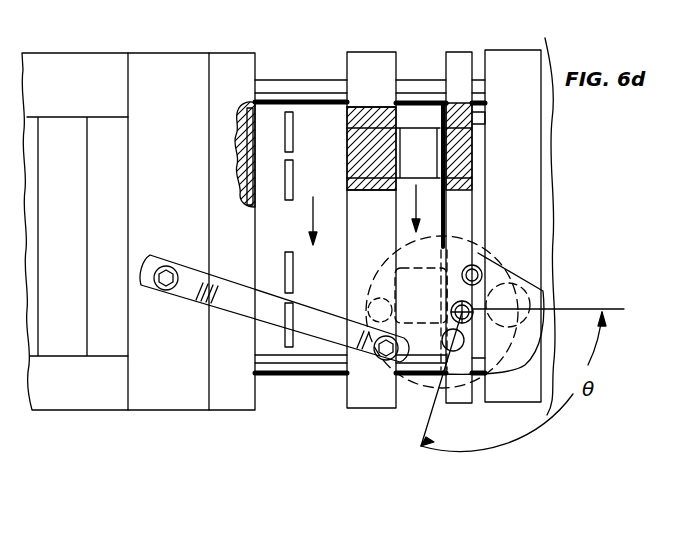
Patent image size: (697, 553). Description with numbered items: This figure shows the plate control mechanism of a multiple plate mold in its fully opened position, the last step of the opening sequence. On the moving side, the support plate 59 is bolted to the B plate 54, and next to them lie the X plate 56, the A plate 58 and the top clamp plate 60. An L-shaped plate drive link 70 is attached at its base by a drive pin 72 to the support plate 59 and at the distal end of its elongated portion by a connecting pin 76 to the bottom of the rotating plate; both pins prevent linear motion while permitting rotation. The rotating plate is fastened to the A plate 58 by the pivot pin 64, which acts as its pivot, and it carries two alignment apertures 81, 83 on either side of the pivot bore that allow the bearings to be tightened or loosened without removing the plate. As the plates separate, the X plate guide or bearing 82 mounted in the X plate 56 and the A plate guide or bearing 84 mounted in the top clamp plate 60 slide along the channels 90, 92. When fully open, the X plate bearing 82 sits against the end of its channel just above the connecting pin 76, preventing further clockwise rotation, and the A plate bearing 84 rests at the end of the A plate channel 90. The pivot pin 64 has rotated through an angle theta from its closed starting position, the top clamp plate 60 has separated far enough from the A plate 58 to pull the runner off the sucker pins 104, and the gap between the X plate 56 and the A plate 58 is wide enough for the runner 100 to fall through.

The support plate 59 is at (172, 53).
The B plate 54 is at (224, 53).
The X plate 56 is at (379, 52).
The A plate 58 is at (461, 52).
The top clamp plate 60 is at (516, 50).
The runner 100 is at (418, 126).
The sucker pins 104 is at (480, 118).
The drive pin 72 is at (171, 264).
The plate drive link 70 is at (200, 305).
The channel 92 is at (410, 258).
The X plate guide or bearing 82 is at (368, 305).
The alignment aperture 81 is at (470, 265).
The pivot pin 64 is at (473, 304).
The A plate guide or bearing 84 is at (514, 285).
The alignment aperture 83 is at (442, 340).
The connecting pin 76 is at (387, 361).
The A plate channel 90 is at (500, 345).